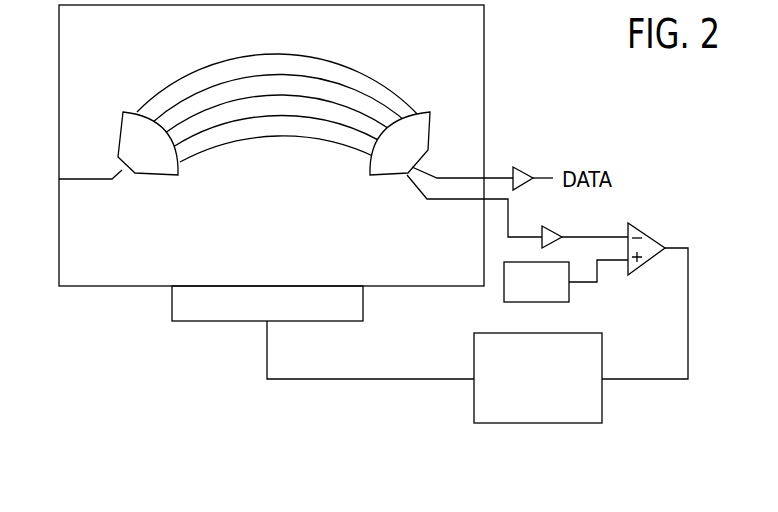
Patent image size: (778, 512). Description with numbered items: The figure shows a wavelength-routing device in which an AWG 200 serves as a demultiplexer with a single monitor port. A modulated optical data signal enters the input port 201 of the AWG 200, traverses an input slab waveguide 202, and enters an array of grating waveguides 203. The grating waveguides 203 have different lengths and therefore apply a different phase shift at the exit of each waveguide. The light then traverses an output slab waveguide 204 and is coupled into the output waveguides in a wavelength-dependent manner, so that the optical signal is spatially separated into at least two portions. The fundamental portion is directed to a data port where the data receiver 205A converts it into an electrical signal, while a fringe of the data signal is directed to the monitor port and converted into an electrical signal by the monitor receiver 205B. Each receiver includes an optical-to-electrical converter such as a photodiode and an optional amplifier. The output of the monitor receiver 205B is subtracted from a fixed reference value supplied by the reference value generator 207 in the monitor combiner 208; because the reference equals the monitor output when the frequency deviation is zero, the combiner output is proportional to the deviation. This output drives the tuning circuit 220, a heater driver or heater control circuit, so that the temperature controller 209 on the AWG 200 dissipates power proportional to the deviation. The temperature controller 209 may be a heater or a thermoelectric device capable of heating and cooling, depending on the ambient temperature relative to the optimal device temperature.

The AWG 200 is at (484, 38).
The input port 201 is at (71, 180).
The input slab waveguide 202 is at (152, 177).
The grating waveguides 203 is at (218, 63).
The output slab waveguide 204 is at (390, 176).
The data receiver 205A is at (527, 167).
The monitor receiver 205B is at (559, 230).
The reference value generator 207 is at (572, 292).
The monitor combiner 208 is at (651, 230).
The temperature controller 209 is at (210, 321).
The tuning circuit 220 is at (500, 423).